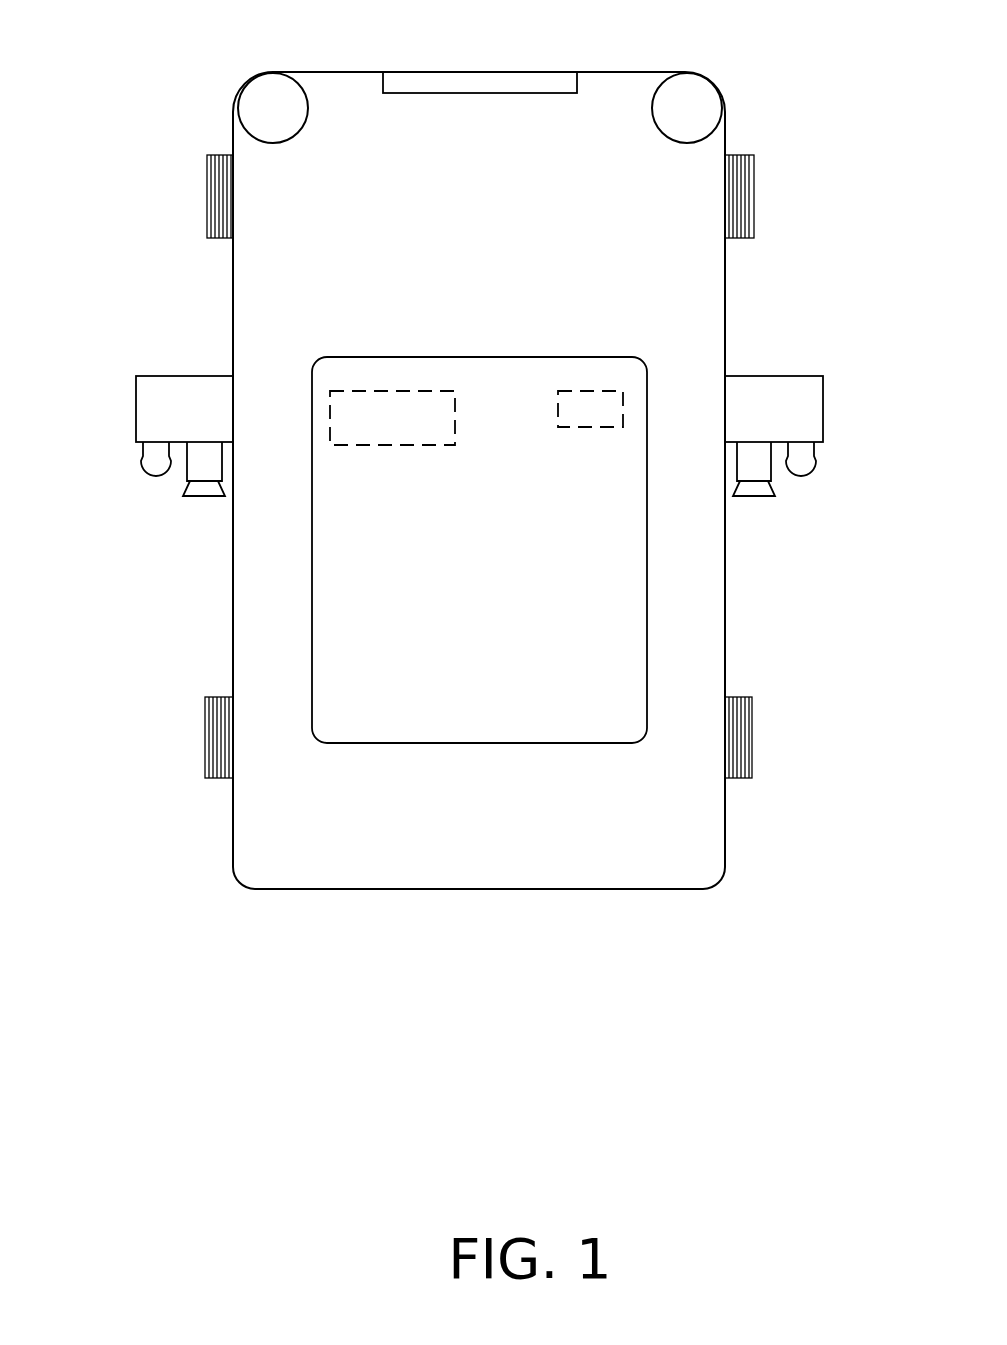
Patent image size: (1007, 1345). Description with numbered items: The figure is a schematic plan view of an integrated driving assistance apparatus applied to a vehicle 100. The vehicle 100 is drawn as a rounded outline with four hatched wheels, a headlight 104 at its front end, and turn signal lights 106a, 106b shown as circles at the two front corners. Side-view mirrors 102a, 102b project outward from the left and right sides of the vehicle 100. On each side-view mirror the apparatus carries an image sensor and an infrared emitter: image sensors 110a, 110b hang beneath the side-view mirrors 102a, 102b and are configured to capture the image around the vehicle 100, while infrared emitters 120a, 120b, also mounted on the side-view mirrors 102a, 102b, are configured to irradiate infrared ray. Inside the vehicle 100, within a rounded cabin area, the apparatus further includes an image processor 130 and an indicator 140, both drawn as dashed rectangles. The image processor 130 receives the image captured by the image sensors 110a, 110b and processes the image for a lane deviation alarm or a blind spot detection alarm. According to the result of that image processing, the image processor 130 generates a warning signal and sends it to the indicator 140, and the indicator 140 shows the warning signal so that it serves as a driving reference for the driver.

The vehicle 100 is at (717, 880).
The headlight 104 is at (478, 82).
The turn signal light 106a is at (700, 95).
The turn signal light 106b is at (272, 100).
The side-view mirror 102a is at (823, 412).
The side-view mirror 102b is at (136, 410).
The image sensor 110a is at (755, 498).
The image sensor 110b is at (203, 498).
The infrared emitter 120a is at (818, 468).
The infrared emitter 120b is at (141, 468).
The image processor 130 is at (600, 391).
The indicator 140 is at (358, 391).